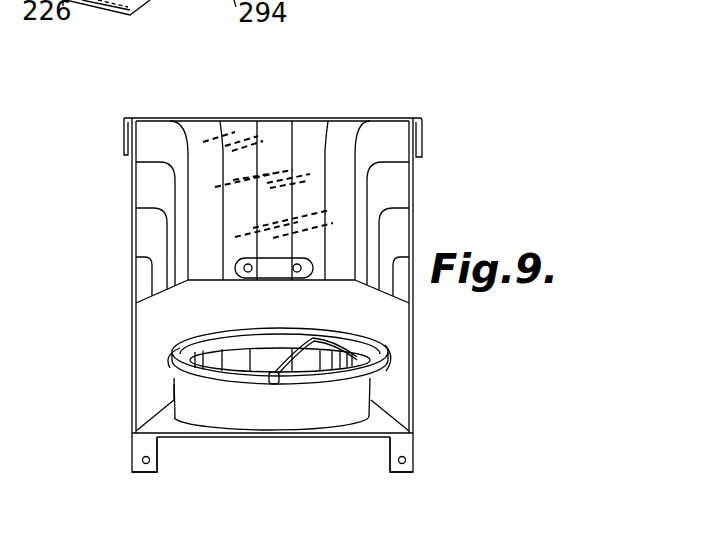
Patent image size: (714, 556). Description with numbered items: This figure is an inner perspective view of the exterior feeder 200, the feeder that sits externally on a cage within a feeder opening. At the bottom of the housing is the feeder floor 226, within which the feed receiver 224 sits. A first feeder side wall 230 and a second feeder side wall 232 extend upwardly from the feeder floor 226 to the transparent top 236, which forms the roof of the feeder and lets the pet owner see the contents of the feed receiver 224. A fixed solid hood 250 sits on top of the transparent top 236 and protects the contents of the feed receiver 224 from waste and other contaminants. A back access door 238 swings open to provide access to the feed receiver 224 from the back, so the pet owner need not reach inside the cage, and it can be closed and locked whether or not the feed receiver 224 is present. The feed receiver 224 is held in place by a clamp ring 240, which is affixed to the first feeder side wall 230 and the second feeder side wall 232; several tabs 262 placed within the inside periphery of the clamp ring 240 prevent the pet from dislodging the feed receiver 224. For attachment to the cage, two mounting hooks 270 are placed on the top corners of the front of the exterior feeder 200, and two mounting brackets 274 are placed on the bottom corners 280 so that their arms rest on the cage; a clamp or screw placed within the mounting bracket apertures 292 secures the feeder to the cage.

The exterior feeder 200 is at (447, 97).
The fixed solid hood 250 is at (279, 118).
The mounting hooks 270 is at (124, 131).
The transparent top 236 is at (148, 195).
The back access door 238 is at (296, 315).
The second feeder side wall 232 is at (153, 330).
The first feeder side wall 230 is at (390, 318).
The tabs 262 is at (382, 352).
The clamp ring 240 is at (302, 383).
The feed receiver 224 is at (326, 412).
The feeder floor 226 is at (170, 417).
The bottom corners 280 is at (133, 431).
The mounting brackets 274 is at (130, 458).
The mounting bracket apertures 292 is at (150, 460).